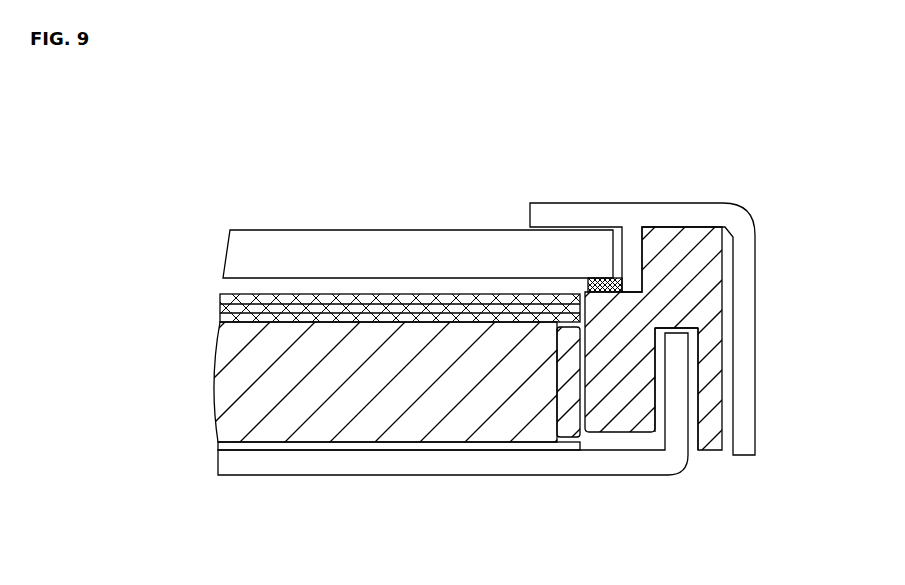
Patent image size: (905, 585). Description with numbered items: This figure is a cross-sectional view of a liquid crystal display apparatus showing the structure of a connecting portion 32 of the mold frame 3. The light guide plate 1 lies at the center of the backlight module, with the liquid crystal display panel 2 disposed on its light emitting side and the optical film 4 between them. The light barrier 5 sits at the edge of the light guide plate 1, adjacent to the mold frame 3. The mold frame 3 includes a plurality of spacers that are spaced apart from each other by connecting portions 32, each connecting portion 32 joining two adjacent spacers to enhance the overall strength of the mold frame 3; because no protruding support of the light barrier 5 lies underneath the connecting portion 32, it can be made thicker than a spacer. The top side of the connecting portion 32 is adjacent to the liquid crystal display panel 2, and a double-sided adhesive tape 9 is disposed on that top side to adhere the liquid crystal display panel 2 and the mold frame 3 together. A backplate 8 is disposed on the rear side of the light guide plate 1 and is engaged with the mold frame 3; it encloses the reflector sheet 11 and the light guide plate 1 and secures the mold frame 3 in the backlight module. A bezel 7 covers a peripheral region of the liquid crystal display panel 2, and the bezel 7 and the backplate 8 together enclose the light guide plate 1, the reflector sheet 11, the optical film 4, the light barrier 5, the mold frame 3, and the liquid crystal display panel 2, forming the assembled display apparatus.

The light guide plate 1 is at (238, 388).
The liquid crystal display panel 2 is at (238, 250).
The mold frame 3 is at (698, 255).
The optical film 4 is at (240, 310).
The light barrier 5 is at (573, 408).
The bezel 7 is at (548, 213).
The backplate 8 is at (237, 468).
The double-sided adhesive tape 9 is at (617, 273).
The reflector sheet 11 is at (220, 443).
The connecting portion 32 is at (627, 352).